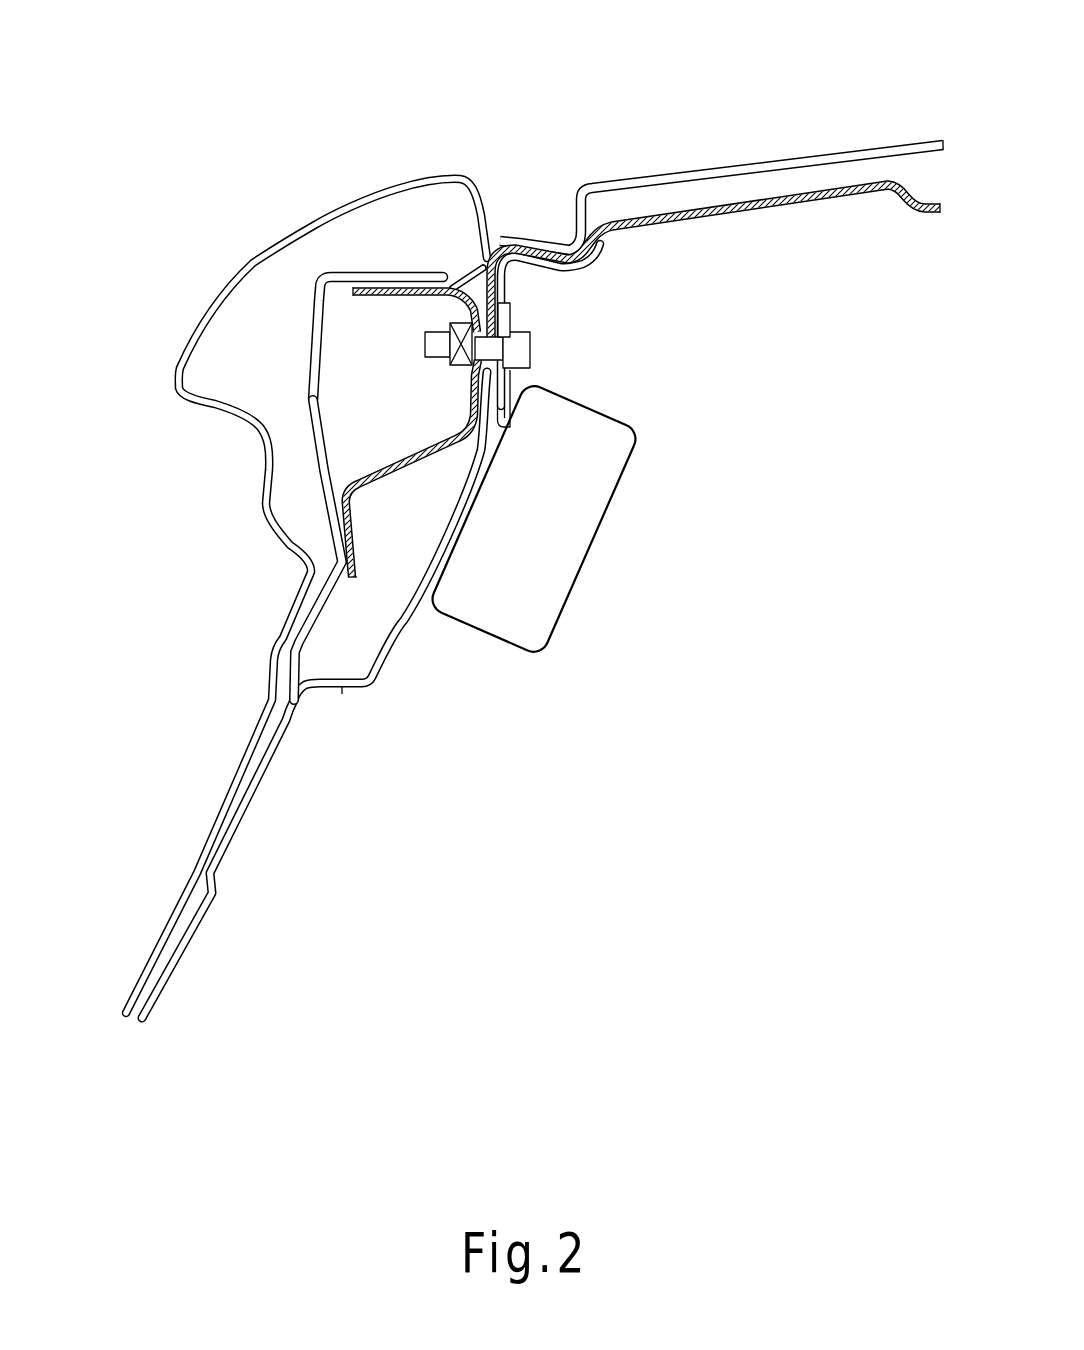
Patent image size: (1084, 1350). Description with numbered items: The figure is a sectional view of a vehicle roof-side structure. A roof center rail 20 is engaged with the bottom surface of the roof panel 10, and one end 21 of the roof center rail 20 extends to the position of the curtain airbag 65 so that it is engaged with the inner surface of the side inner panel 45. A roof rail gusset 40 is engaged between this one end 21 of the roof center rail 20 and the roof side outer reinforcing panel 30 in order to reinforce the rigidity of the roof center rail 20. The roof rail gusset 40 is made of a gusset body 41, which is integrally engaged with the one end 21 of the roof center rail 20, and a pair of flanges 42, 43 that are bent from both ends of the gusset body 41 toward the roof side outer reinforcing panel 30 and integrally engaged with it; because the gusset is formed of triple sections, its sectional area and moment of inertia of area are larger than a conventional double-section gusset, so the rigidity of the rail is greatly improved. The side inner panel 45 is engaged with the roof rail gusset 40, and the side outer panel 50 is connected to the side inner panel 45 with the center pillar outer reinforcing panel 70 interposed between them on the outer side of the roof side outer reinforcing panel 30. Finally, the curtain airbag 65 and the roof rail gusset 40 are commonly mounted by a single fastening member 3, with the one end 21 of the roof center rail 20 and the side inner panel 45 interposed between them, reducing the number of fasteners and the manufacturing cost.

The roof panel 10 is at (782, 163).
The roof center rail 20 is at (790, 200).
The one end of the roof center rail 21 is at (508, 294).
The fastening member 3 is at (522, 348).
The roof side outer reinforcing panel 30 is at (323, 335).
The roof rail gusset 40 is at (419, 291).
The gusset body 41 is at (452, 265).
The flange 42 is at (360, 268).
The flange 43 is at (357, 527).
The side inner panel 45 is at (387, 653).
The side outer panel 50 is at (187, 407).
The curtain airbag 65 is at (593, 425).
The center pillar outer reinforcing panel 70 is at (327, 515).